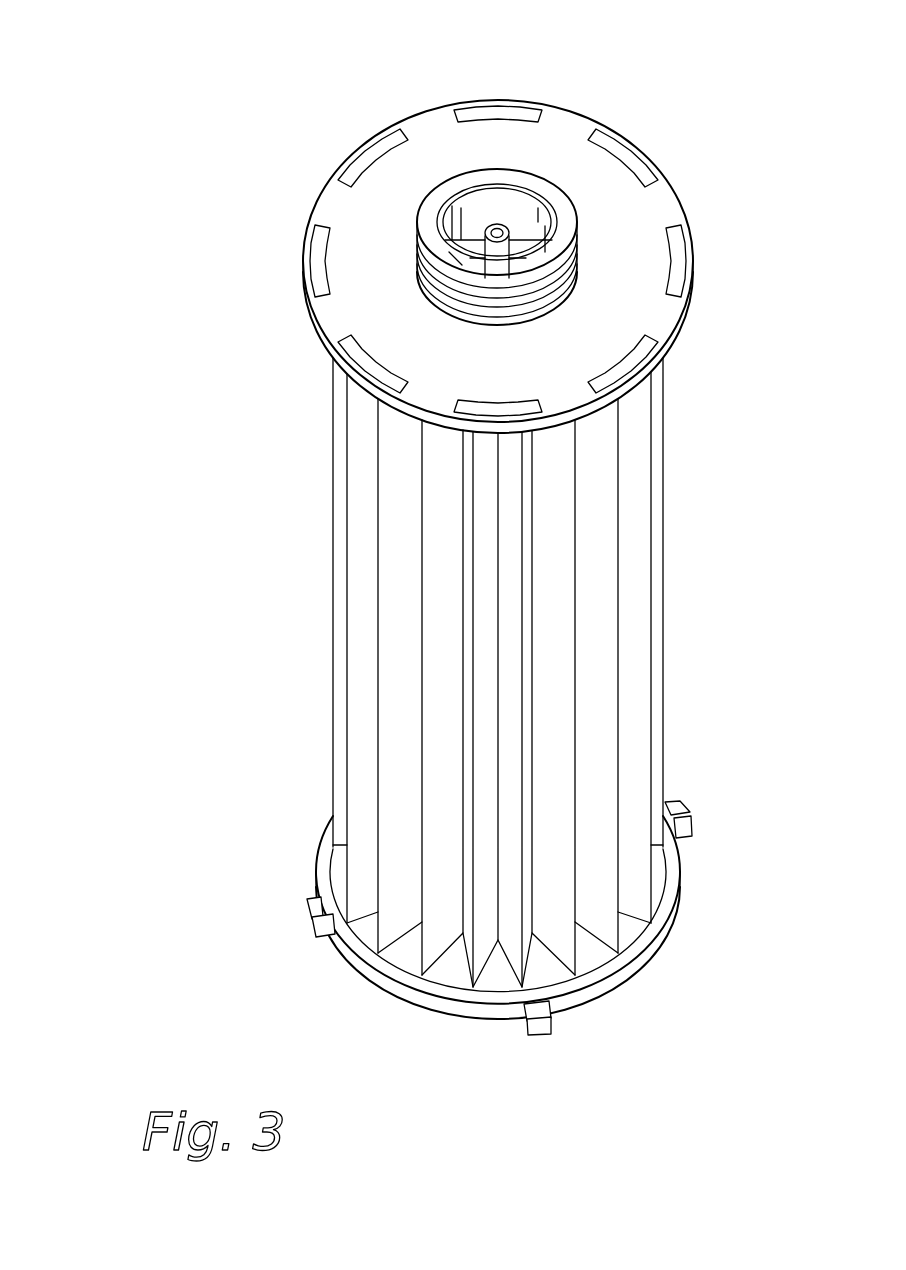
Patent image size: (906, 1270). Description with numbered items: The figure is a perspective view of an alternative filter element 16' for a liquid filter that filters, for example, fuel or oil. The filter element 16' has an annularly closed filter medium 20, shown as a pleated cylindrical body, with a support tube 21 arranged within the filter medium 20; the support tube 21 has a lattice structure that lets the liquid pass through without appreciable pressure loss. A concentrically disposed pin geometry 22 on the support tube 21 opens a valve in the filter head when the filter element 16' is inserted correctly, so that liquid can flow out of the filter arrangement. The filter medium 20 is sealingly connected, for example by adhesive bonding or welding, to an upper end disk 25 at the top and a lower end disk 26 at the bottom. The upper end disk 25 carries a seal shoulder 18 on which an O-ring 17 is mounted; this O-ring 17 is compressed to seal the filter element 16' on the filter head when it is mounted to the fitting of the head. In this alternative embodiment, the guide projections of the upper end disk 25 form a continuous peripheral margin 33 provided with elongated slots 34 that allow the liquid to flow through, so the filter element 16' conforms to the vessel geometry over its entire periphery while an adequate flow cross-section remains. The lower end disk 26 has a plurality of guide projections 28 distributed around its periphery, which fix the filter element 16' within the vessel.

The alternative filter element 16' is at (445, 569).
The O-ring 17 is at (545, 297).
The seal shoulder 18 is at (570, 226).
The filter medium 20 is at (638, 690).
The support tube 21 is at (470, 228).
The pin geometry 22 is at (506, 222).
The upper end disk 25 is at (657, 315).
The lower end disk 26 is at (633, 975).
The guide projections 28 is at (684, 808).
The peripheral margin 33 is at (433, 106).
The elongated slots 34 is at (510, 106).